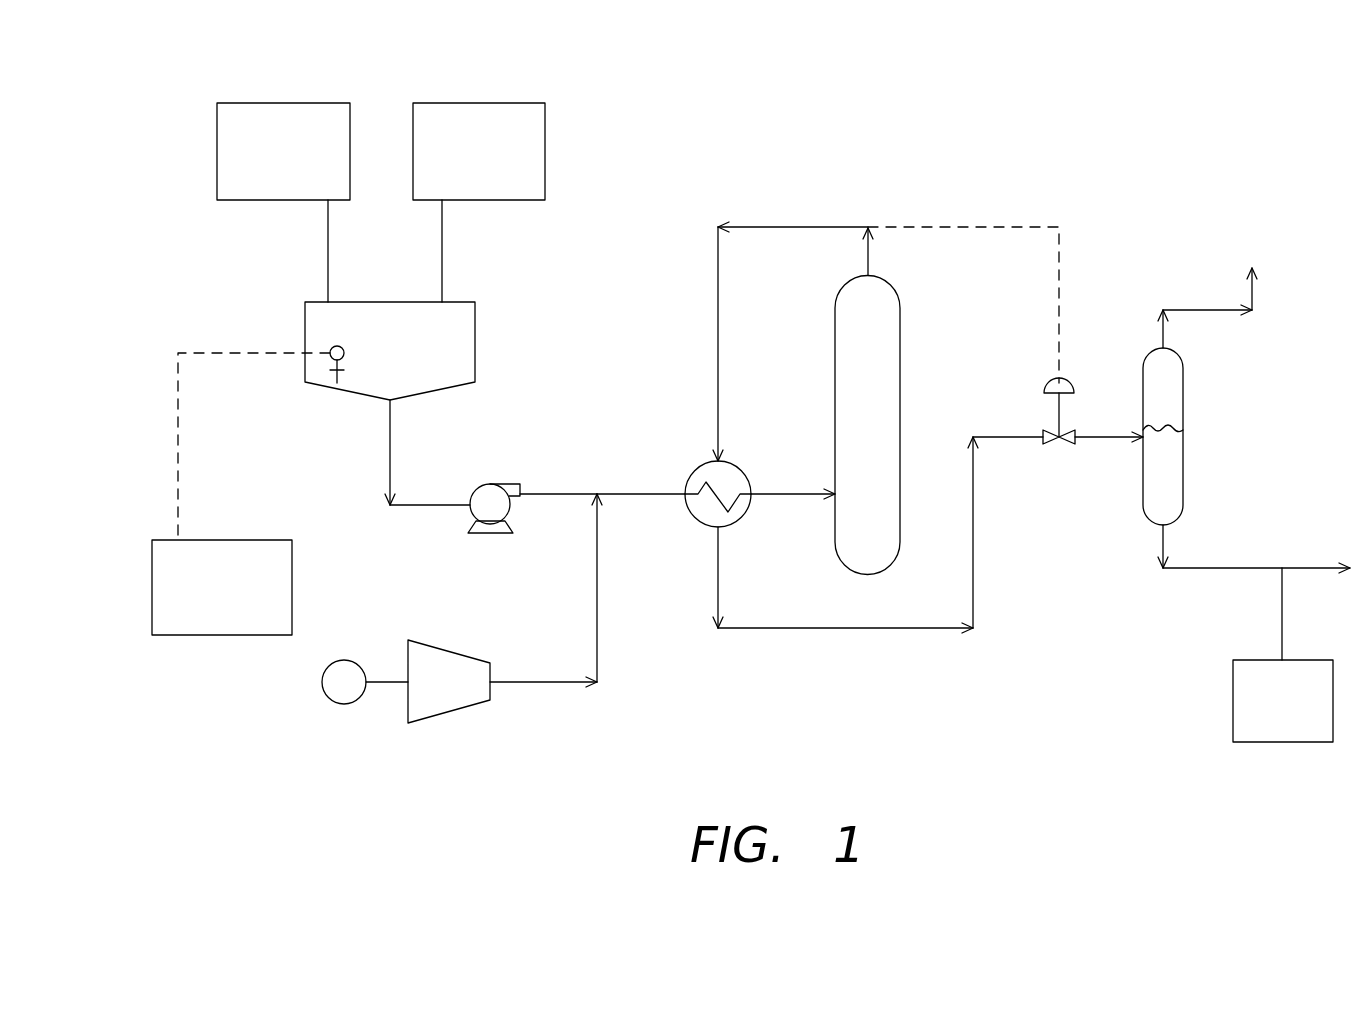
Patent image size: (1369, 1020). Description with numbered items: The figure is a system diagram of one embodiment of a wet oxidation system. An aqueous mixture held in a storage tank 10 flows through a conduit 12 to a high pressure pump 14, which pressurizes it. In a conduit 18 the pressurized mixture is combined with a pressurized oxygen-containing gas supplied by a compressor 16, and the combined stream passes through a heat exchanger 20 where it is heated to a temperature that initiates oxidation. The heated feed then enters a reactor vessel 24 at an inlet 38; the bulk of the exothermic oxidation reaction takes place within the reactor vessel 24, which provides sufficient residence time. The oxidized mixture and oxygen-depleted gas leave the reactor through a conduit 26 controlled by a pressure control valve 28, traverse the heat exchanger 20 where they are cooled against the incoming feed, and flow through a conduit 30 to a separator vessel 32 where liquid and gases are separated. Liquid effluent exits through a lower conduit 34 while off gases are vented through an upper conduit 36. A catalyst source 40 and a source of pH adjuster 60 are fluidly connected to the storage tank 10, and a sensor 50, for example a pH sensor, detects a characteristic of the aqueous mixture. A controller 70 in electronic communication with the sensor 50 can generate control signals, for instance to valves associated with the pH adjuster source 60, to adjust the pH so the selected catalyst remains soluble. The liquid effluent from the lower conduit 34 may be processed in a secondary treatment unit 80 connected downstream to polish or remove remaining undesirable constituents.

The storage tank 10 is at (475, 302).
The conduit 12 is at (390, 452).
The high pressure pump 14 is at (478, 538).
The compressor 16 is at (433, 648).
The conduit 18 is at (637, 497).
The heat exchanger 20 is at (702, 464).
The reactor vessel 24 is at (900, 296).
The conduit 26 is at (825, 227).
The pressure control valve 28 is at (1045, 385).
The conduit 30 is at (975, 540).
The separator vessel 32 is at (1183, 382).
The lower conduit 34 is at (1215, 568).
The upper conduit 36 is at (1205, 310).
The inlet 38 is at (829, 470).
The catalyst source 40 is at (545, 103).
The sensor 50 is at (330, 350).
The source of pH adjuster 60 is at (217, 103).
The controller 70 is at (152, 540).
The secondary treatment unit 80 is at (1233, 742).